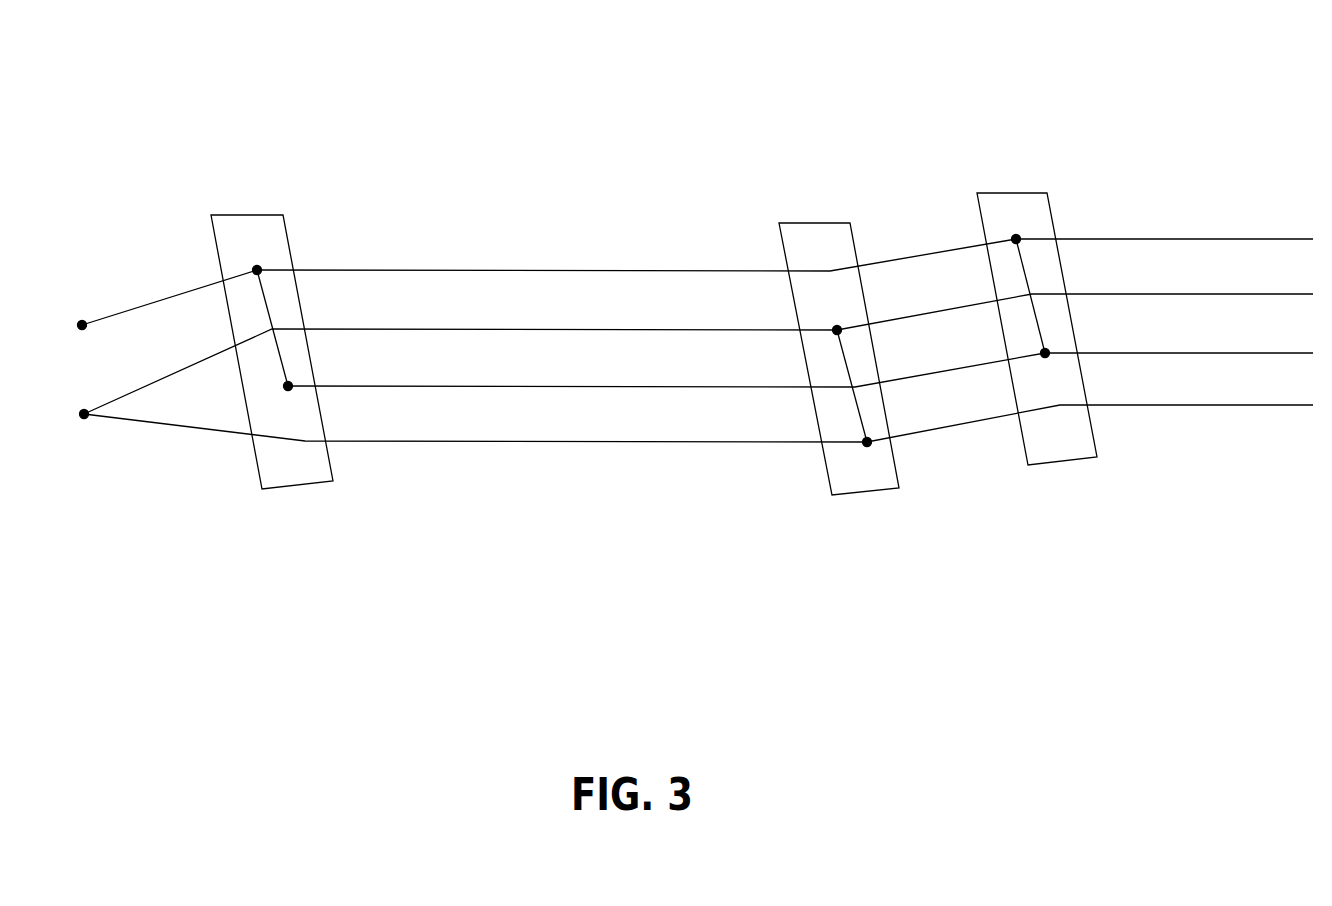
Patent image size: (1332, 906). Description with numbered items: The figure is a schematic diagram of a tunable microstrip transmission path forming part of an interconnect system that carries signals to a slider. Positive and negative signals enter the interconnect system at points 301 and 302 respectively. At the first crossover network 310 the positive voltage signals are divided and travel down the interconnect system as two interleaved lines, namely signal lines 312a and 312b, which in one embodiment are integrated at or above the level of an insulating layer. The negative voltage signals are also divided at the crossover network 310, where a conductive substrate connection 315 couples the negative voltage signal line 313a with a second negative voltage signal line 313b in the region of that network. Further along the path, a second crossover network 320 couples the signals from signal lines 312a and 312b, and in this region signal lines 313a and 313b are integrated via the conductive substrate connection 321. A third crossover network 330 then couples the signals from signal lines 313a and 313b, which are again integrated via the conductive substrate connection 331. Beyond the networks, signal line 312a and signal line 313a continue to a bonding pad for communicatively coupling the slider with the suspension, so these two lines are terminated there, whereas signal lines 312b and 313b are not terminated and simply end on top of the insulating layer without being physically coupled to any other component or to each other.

The point 301 is at (83, 420).
The point 302 is at (81, 321).
The crossover network 310 is at (228, 215).
The signal line 312a is at (470, 441).
The signal line 312b is at (650, 329).
The negative voltage signal line 313a is at (578, 271).
The second negative voltage signal line 313b is at (575, 387).
The conductive substrate connection 315 is at (267, 297).
The second crossover network 320 is at (797, 222).
The conductive substrate connection 321 is at (858, 407).
The third crossover network 330 is at (993, 193).
The conductive substrate connection 331 is at (1025, 273).